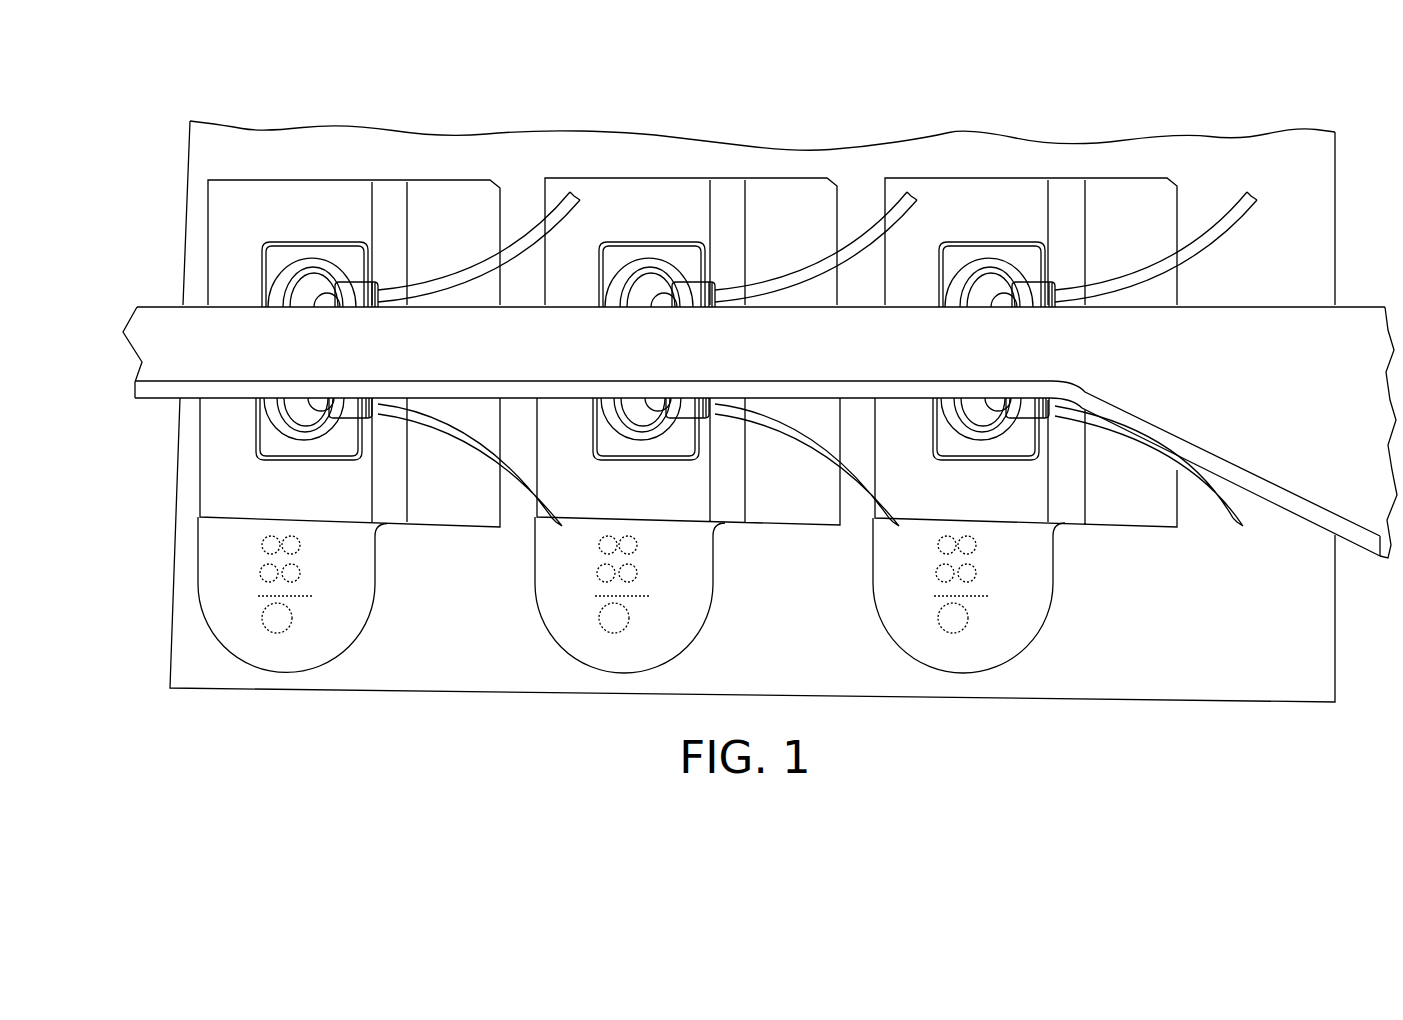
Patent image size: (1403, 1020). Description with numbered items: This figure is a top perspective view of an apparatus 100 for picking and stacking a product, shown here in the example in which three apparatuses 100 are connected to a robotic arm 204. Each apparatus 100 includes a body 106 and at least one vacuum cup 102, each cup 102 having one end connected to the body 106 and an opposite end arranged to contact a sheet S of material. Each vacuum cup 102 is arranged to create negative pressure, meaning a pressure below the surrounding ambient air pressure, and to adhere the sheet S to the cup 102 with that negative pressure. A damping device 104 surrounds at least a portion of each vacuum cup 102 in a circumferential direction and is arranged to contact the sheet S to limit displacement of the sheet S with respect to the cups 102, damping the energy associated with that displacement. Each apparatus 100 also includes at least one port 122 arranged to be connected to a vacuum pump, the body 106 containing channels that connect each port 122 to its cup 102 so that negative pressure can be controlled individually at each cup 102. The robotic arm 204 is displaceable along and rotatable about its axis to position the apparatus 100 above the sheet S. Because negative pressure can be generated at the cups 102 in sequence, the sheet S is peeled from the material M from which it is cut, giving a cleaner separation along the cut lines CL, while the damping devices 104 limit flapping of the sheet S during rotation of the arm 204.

The apparatus 100 is at (338, 232).
The vacuum cup 102 is at (267, 250).
The damping device 104 is at (303, 243).
The body 106 is at (317, 402).
The port 122 is at (358, 288).
The robotic arm 204 is at (540, 330).
The sheet of material S is at (552, 600).
The cut lines CL is at (1022, 653).
The material M is at (1188, 683).